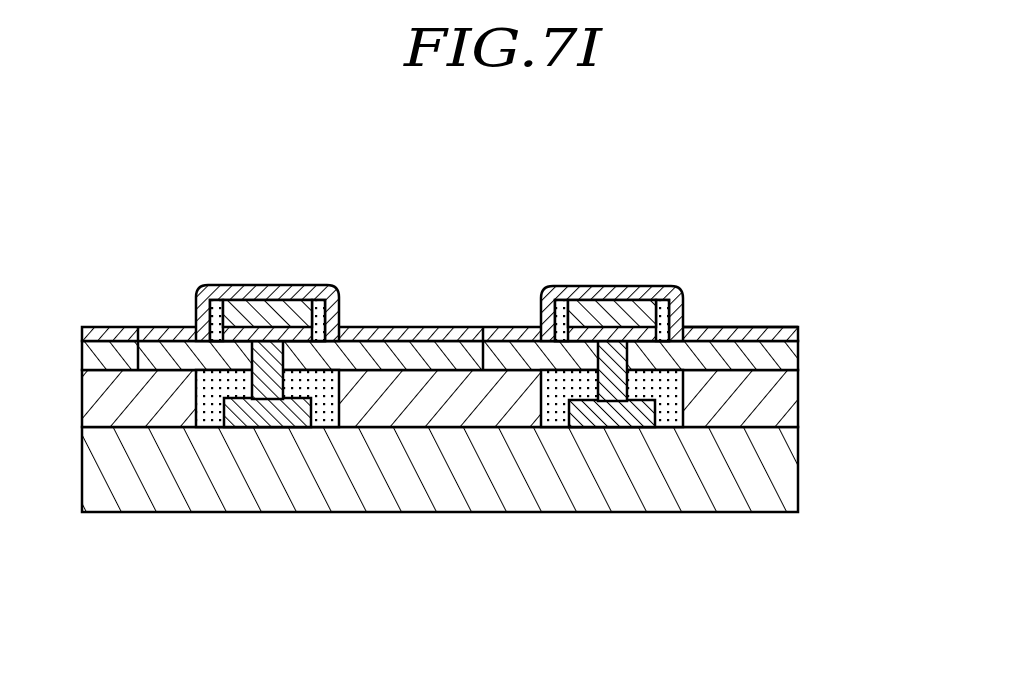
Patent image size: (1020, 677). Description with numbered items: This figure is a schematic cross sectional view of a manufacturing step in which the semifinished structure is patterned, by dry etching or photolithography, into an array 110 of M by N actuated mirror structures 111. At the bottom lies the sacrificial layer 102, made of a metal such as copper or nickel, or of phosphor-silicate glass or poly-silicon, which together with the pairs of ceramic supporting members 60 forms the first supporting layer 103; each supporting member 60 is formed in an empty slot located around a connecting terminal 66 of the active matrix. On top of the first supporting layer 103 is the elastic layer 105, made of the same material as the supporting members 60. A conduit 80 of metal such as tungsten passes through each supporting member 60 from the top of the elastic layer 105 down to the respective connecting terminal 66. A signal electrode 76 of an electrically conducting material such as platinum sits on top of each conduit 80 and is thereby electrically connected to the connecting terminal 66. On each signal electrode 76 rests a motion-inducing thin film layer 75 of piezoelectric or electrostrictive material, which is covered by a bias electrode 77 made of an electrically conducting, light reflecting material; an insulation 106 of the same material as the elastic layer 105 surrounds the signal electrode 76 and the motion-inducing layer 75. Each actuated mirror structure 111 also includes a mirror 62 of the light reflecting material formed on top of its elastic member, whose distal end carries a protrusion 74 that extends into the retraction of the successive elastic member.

The array of M×N actuated mirror structures 110 is at (710, 147).
The actuated mirror structure 111 is at (797, 228).
The bias electrode 77 is at (258, 287).
The motion-inducing thin film layer 75 is at (592, 313).
The insulation 106 is at (685, 303).
The signal electrode 76 is at (690, 329).
The mirror 62 is at (402, 335).
The elastic layer 105 is at (785, 357).
The first supporting layer 103 is at (827, 372).
The sacrificial layer 102 is at (414, 413).
The protrusion 74 is at (515, 358).
The conduit 80 is at (612, 373).
The connecting terminal 66 is at (640, 422).
The supporting member 60 is at (670, 398).